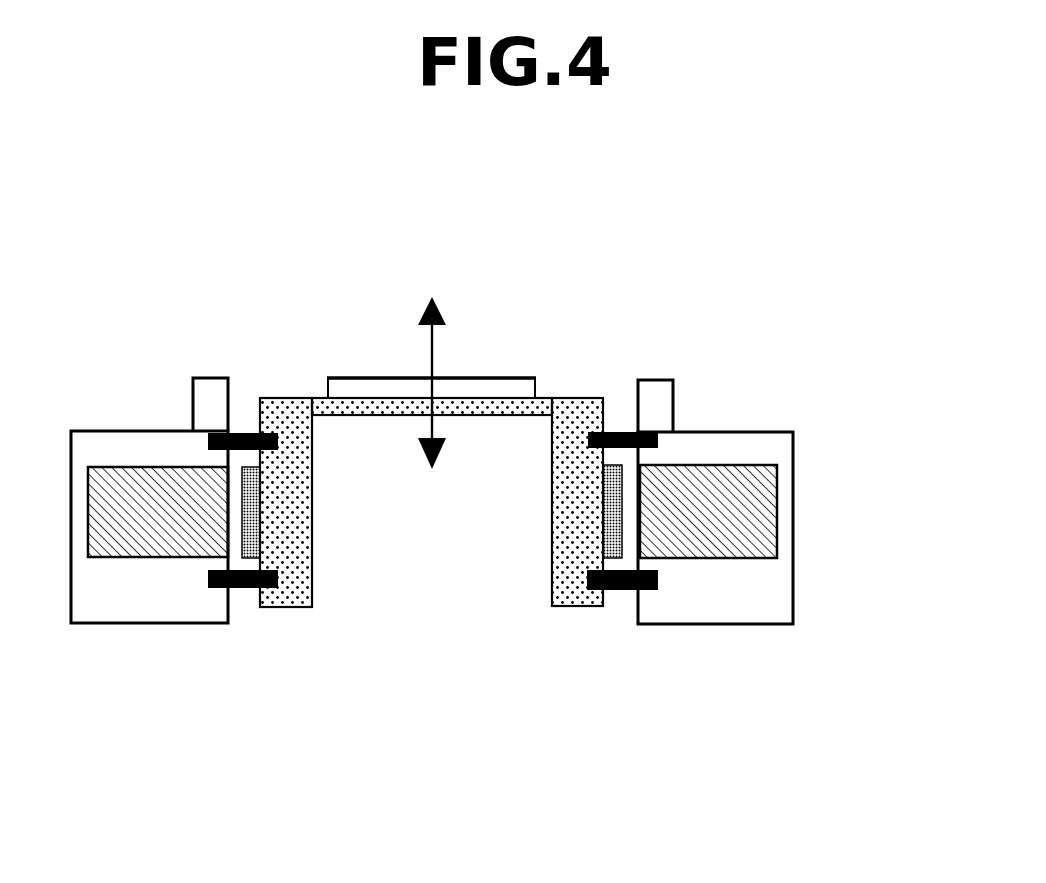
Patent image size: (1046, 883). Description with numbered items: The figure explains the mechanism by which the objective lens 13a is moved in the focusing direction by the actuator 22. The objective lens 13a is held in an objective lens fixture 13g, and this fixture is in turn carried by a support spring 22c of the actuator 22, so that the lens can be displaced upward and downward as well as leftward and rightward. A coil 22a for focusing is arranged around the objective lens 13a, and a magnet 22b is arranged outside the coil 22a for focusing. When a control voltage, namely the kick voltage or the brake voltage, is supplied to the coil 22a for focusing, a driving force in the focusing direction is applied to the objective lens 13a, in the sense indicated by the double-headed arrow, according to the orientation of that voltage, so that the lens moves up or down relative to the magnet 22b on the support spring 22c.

The objective lens 13a is at (485, 378).
The objective lens fixture 13g is at (295, 398).
The actuator 22 is at (507, 600).
The coil for focusing 22a is at (622, 518).
The magnet 22b is at (752, 465).
The support spring 22c is at (590, 449).